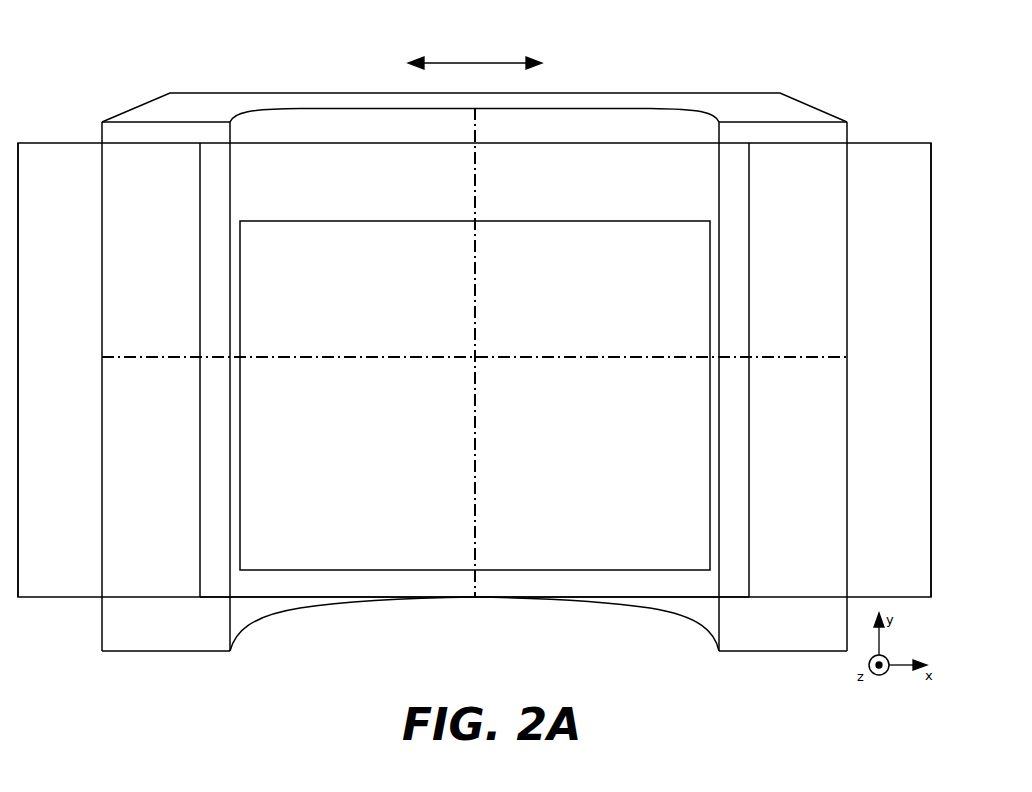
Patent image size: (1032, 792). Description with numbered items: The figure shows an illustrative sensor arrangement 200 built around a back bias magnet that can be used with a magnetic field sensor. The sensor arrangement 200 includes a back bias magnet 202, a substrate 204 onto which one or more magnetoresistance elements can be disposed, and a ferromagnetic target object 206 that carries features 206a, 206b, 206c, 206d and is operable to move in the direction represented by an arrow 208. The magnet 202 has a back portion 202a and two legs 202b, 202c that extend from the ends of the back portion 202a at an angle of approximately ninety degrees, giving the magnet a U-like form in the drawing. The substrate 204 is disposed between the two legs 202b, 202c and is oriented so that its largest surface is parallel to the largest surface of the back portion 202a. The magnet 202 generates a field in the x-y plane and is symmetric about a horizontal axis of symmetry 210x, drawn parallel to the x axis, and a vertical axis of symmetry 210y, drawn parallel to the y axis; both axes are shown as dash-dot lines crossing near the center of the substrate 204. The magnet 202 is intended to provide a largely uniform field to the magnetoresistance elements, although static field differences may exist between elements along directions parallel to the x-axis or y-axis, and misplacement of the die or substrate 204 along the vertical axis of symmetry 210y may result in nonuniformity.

The sensor arrangement 200 is at (645, 80).
The back bias magnet 202 is at (801, 101).
The back portion 202a is at (474, 122).
The leg 202b is at (166, 635).
The leg 202c is at (783, 635).
The substrate 204 is at (475, 395).
The ferromagnetic target object 206 is at (897, 142).
The feature 206a is at (54, 370).
The feature 206b is at (337, 586).
The feature 206c is at (612, 586).
The feature 206d is at (901, 370).
The arrow 208 is at (483, 62).
The horizontal axis of symmetry 210x is at (590, 357).
The vertical axis of symmetry 210y is at (477, 282).